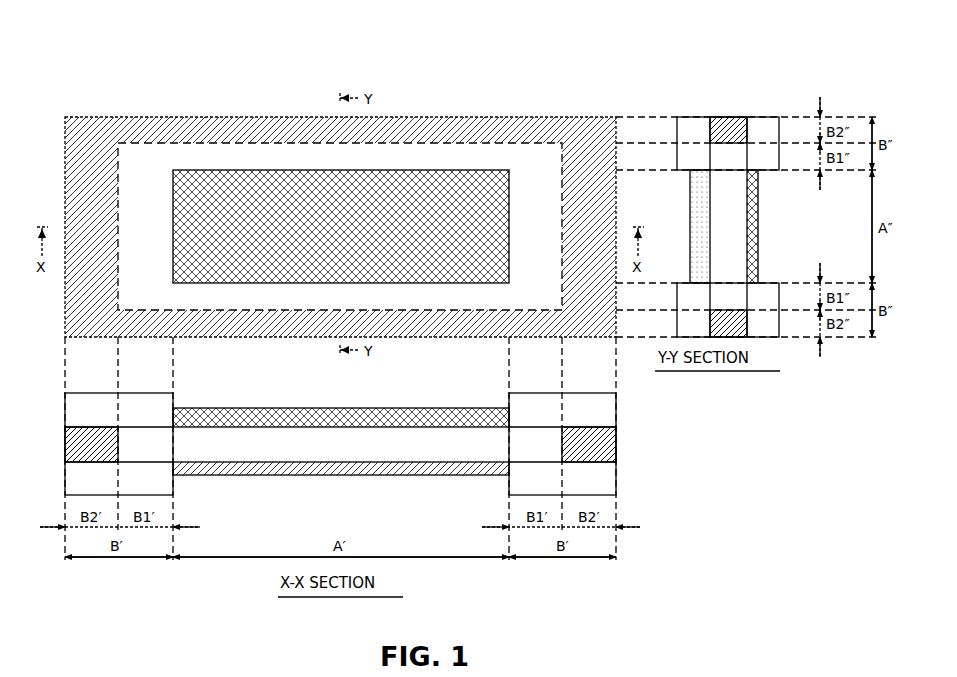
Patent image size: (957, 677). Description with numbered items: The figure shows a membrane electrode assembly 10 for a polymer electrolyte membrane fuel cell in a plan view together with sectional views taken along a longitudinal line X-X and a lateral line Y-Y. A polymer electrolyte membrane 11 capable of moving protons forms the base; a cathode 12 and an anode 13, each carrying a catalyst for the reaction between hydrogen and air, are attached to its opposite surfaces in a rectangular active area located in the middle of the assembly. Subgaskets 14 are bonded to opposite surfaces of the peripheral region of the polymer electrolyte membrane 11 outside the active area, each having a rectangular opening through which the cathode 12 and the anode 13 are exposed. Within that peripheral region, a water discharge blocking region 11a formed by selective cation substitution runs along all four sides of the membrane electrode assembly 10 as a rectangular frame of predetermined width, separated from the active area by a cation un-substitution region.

The membrane electrode assembly 10 is at (526, 105).
The polymer electrolyte membrane 11 is at (727, 117).
The water discharge blocking region 11a is at (735, 127).
The cathode 12 is at (290, 183).
The anode 13 is at (750, 236).
The subgasket 14 is at (140, 180).